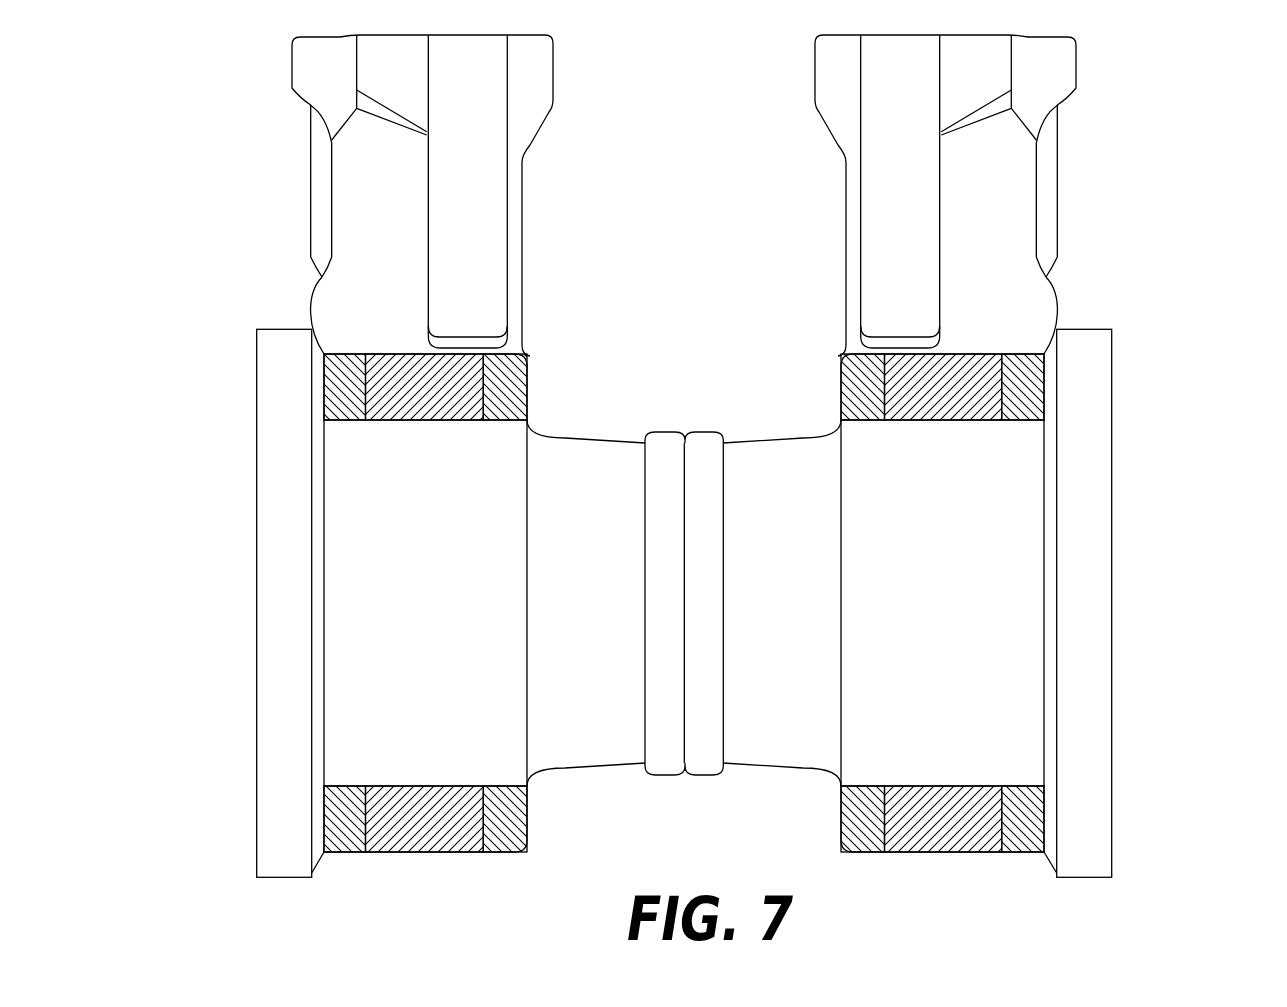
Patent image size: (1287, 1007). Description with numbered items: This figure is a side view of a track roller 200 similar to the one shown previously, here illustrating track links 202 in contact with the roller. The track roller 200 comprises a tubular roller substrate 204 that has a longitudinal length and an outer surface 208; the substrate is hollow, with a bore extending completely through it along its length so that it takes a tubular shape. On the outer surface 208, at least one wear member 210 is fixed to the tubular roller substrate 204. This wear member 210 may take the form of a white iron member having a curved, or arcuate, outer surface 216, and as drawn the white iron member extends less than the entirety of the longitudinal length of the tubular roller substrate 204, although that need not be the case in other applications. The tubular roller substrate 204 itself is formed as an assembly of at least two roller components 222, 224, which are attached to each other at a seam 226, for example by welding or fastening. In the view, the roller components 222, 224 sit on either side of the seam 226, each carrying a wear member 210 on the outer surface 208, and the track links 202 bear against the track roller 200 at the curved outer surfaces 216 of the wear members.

The track roller 200 is at (1124, 401).
The flange 202 is at (285, 858).
The tubular roller substrate 204 is at (507, 463).
The outer surface 208 is at (1027, 385).
The wear member 210 is at (460, 385).
The curved outer surface 216 is at (397, 354).
The roller component 222 is at (254, 854).
The roller component 224 is at (1116, 641).
The seam 226 is at (685, 612).